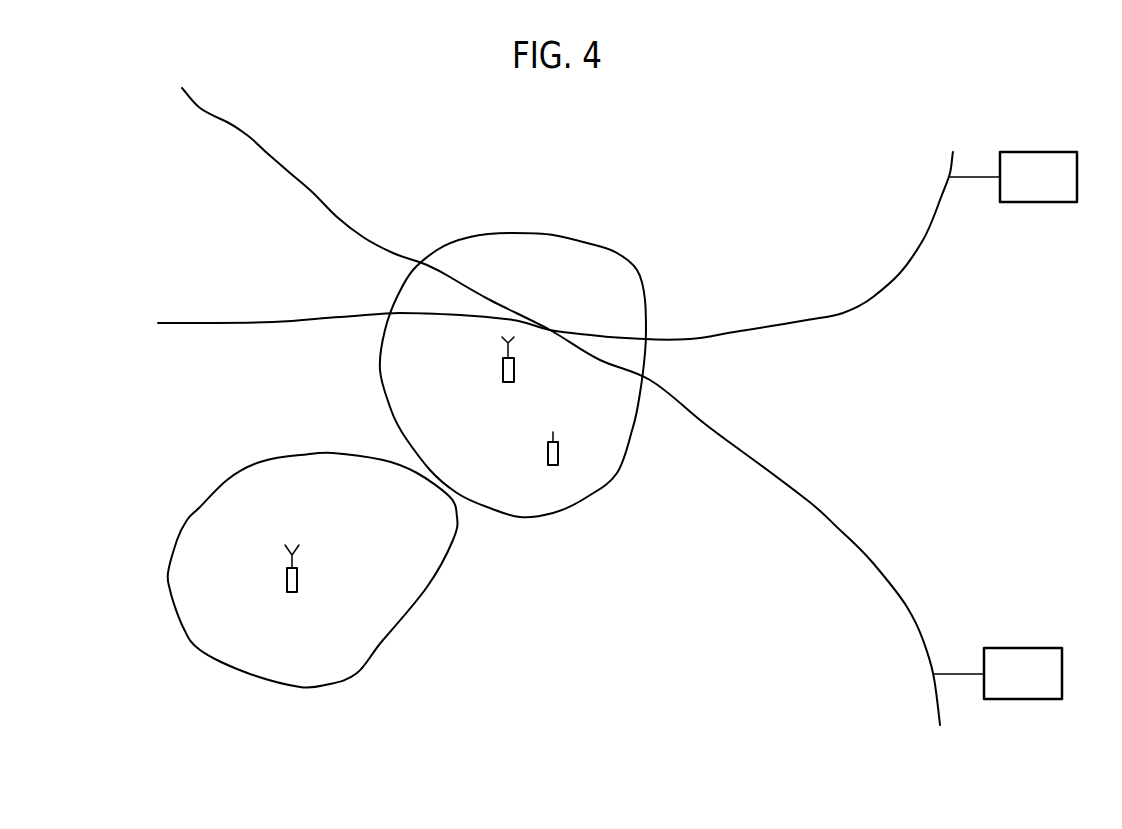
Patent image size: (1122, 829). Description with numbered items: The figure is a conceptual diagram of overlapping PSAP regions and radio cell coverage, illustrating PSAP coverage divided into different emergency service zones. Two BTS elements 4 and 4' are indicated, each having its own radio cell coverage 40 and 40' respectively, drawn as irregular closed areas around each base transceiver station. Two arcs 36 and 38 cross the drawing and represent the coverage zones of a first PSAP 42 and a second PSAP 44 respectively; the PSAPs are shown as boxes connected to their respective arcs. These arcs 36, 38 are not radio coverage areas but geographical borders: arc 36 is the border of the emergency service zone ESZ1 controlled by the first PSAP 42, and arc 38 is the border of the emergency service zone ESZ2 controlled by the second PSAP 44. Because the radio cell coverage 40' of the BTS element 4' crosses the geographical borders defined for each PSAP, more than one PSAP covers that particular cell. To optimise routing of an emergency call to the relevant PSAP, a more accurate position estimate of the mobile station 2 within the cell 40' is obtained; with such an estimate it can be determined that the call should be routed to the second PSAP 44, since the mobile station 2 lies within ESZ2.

The mobile station 2 is at (558, 455).
The BTS element 4 is at (314, 569).
The BTS element 4' is at (534, 361).
The arc 36 is at (843, 313).
The arc 38 is at (842, 530).
The radio cell coverage 40 is at (333, 570).
The radio cell coverage 40' is at (549, 375).
The first PSAP 42 is at (1038, 202).
The second PSAP 44 is at (1023, 648).